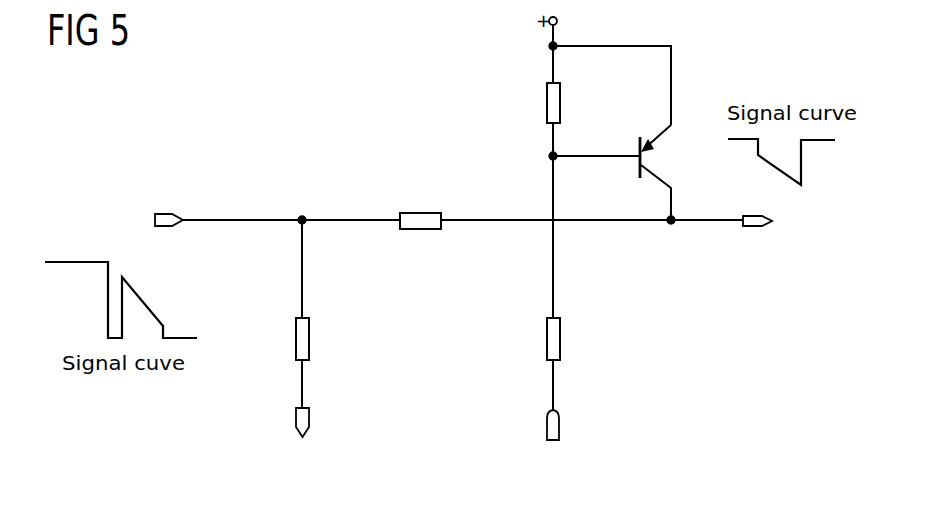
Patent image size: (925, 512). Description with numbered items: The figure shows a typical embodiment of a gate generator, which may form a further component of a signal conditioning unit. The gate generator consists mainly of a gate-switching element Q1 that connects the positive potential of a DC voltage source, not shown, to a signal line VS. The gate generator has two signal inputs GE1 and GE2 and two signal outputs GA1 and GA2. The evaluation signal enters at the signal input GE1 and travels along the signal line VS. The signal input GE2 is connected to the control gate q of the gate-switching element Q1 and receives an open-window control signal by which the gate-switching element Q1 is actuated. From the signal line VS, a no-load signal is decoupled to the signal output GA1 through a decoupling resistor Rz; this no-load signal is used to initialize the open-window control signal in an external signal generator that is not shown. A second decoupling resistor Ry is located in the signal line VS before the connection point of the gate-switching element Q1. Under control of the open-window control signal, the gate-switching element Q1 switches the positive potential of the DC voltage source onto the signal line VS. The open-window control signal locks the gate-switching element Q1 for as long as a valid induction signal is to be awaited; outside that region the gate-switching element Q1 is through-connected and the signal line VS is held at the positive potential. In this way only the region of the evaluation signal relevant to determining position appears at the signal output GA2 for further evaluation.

The signal input GE1 is at (162, 227).
The signal line VS is at (242, 209).
The decoupling resistor Rz is at (296, 335).
The signal output GA1 is at (310, 425).
The second decoupling resistor Ry is at (420, 213).
The control gate q is at (586, 155).
The gate-switching element Q1 is at (640, 172).
The signal output GA2 is at (755, 227).
The signal input GE2 is at (559, 425).